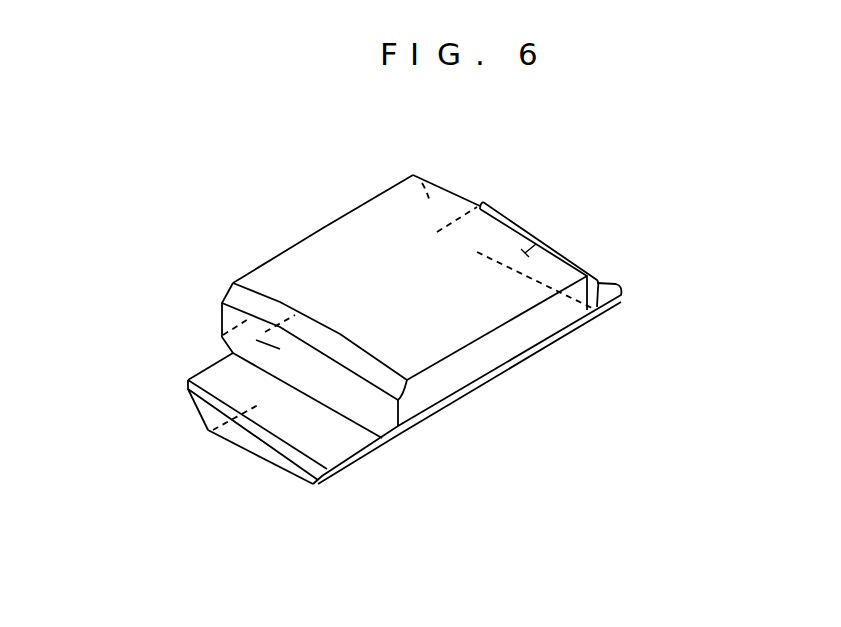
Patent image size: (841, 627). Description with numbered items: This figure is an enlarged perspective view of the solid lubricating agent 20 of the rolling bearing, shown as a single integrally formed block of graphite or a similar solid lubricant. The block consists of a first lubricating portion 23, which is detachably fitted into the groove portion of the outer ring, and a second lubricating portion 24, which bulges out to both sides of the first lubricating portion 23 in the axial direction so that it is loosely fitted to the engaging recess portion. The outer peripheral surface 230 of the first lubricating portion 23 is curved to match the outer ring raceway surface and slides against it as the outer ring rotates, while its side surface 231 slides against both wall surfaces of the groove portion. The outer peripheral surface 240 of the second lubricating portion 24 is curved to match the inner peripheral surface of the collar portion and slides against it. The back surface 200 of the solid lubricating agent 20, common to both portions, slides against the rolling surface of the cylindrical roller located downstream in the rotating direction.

The solid lubricating agent 20 is at (412, 322).
The first lubricating portion 23 is at (412, 322).
The outer peripheral surface of the first lubricating portion 230 is at (322, 280).
The side surface of the first lubricating portion 231 is at (257, 340).
The second lubricating portion 24 is at (566, 240).
The outer peripheral surface of the second lubricating portion 240 is at (603, 288).
The back surface of the solid lubricating agent 200 is at (469, 387).